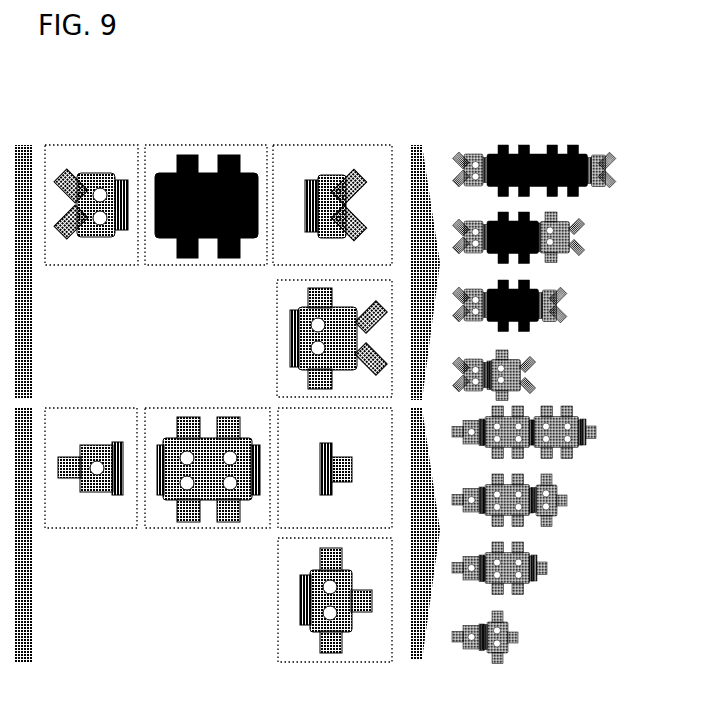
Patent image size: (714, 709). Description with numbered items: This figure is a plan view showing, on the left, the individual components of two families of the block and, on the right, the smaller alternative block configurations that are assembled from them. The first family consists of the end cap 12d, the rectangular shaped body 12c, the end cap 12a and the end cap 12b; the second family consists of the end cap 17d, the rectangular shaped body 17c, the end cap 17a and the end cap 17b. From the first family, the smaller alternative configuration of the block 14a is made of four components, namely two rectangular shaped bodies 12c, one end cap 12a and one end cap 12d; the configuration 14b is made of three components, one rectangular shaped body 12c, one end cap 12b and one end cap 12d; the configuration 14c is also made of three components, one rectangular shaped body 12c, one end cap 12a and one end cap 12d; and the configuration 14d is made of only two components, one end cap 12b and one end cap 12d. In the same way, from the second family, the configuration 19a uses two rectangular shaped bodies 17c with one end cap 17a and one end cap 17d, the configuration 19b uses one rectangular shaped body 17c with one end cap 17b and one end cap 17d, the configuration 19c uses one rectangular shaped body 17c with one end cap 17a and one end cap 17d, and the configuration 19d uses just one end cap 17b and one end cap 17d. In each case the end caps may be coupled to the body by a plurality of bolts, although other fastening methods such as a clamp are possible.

The end cap 12a is at (332, 205).
The end cap 12b is at (332, 338).
The rectangular shaped body 12c is at (205, 205).
The end cap 12d is at (91, 205).
The smaller alternative configuration of the block 14a is at (553, 171).
The smaller alternative configuration of the block 14b is at (553, 238).
The smaller alternative configuration of the block 14c is at (550, 306).
The smaller alternative configuration of the block 14d is at (550, 375).
The end cap 17a is at (335, 468).
The end cap 17b is at (333, 600).
The rectangular shaped body 17c is at (206, 468).
The end cap 17d is at (90, 468).
The smaller alternative configuration of the block 19a is at (549, 432).
The smaller alternative configuration of the block 19b is at (549, 500).
The smaller alternative configuration of the block 19c is at (548, 568).
The smaller alternative configuration of the block 19d is at (548, 637).